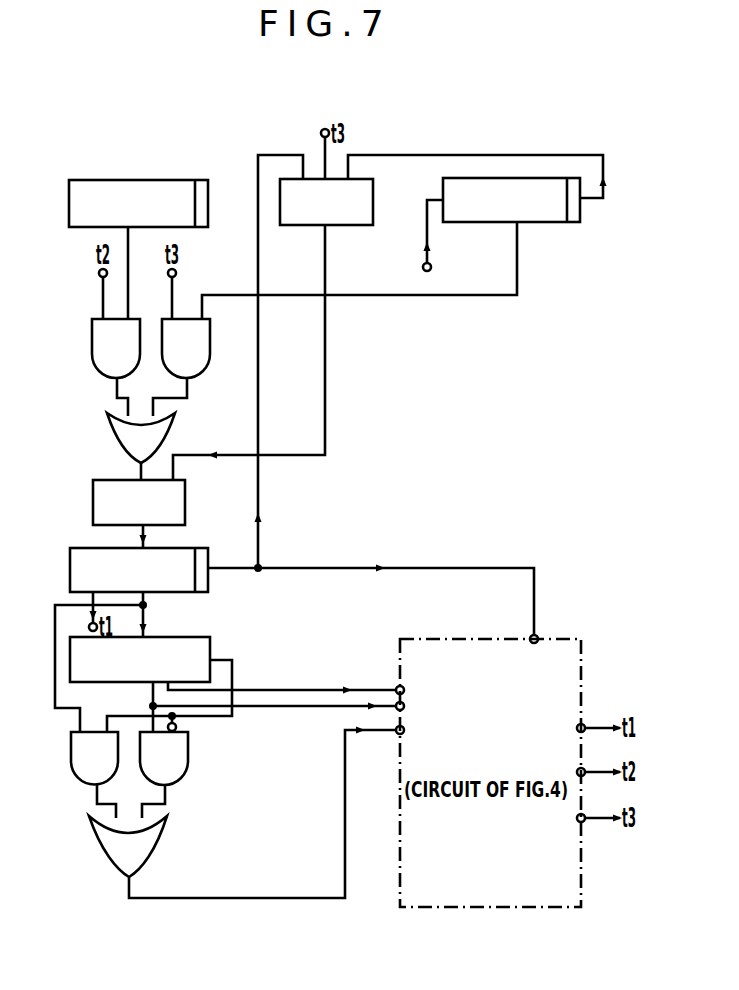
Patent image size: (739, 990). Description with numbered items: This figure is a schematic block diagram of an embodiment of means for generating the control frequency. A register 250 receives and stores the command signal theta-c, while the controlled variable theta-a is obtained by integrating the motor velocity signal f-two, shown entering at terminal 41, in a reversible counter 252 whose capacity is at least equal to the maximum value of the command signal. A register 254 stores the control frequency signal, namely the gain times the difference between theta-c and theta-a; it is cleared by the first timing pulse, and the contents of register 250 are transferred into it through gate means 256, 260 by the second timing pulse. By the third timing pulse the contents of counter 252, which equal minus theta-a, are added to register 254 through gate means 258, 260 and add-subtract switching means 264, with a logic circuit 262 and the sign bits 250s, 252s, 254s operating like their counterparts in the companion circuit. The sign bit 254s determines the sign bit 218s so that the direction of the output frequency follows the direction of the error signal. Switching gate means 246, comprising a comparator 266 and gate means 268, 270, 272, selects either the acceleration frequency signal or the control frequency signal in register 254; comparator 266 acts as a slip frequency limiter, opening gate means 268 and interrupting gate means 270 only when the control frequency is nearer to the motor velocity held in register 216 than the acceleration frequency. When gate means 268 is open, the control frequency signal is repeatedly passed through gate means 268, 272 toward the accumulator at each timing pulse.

The register 250 is at (113, 180).
The sign bit 250s is at (205, 180).
The counter 252 is at (535, 222).
The sign bit 252s is at (578, 212).
The logic circuit 262 is at (326, 202).
The gate means 256 is at (116, 348).
The gate means 258 is at (186, 348).
The gate means 260 is at (130, 446).
The add-subtract switching means 264 is at (139, 502).
The register 254 is at (88, 548).
The sign bit 254s is at (208, 574).
The comparator 266 is at (140, 659).
The gate means 268 is at (94, 758).
The gate means 270 is at (164, 758).
The gate means 272 is at (128, 846).
The register 216 is at (418, 689).
The switching gate means 246 is at (408, 702).
The sign bit 218s is at (541, 653).
The signal f2 input terminal 41 is at (461, 240).